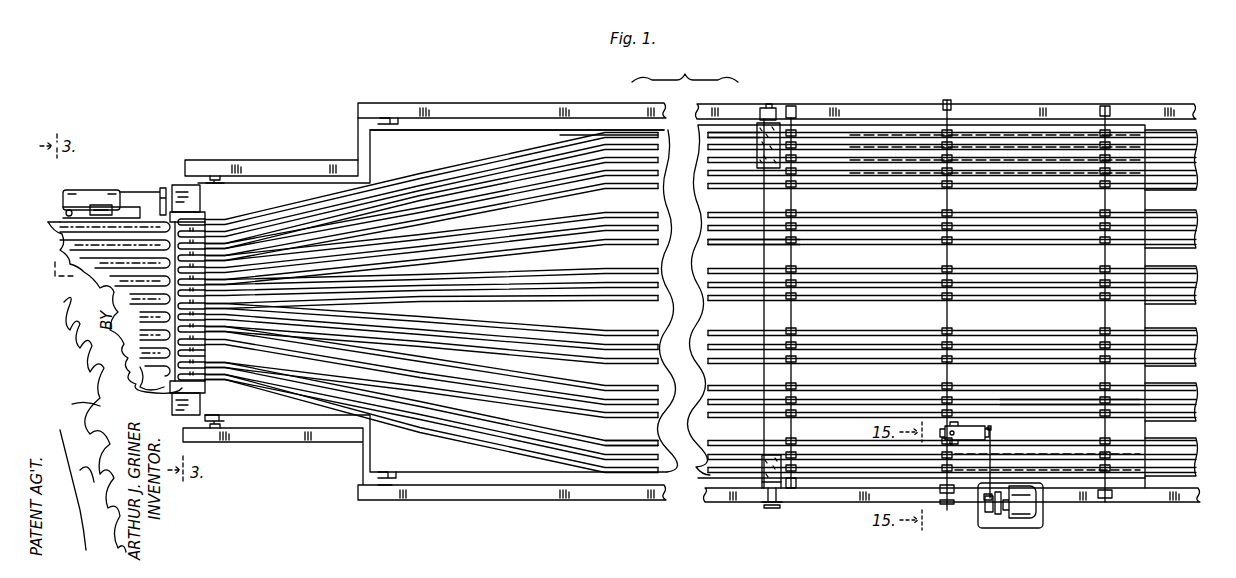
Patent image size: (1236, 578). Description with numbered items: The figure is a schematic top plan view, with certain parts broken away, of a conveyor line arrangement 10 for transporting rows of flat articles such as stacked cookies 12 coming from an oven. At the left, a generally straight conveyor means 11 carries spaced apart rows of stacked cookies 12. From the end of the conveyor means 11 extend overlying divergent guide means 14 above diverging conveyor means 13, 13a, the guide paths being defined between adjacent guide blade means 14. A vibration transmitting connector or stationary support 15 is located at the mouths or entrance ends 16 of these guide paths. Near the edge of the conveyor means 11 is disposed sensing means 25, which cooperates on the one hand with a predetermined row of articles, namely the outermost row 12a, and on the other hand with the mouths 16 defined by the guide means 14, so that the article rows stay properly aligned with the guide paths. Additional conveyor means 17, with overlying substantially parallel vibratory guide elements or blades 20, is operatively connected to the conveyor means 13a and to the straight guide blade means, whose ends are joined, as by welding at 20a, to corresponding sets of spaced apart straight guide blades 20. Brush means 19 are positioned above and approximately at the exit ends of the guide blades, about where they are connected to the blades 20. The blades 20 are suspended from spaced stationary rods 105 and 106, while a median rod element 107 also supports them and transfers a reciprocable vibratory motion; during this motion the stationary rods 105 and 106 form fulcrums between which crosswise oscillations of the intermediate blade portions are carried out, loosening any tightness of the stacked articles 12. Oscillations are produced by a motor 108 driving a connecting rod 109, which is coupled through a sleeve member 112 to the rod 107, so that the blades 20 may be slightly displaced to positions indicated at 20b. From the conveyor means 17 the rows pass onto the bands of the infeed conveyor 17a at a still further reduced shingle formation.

The conveyor line arrangement 10 is at (520, 96).
The straight conveyor means 11 is at (47, 230).
The stacked cookies 12 is at (130, 278).
The outermost row 12a is at (64, 206).
The diverging conveyor means 13 is at (258, 183).
The diverging conveyor means 13a is at (435, 128).
The divergent guide means 14 is at (460, 189).
The vibration transmitting connector 15 is at (180, 210).
The entrance ends 16 is at (212, 238).
The additional conveyor means 17 is at (1148, 128).
The infeed conveyor 17a is at (1204, 148).
The brush means 19 is at (760, 152).
The guide blades 20 is at (1090, 472).
The welded connection 20a is at (754, 246).
The displaced blade positions 20b is at (1034, 446).
The sensing means 25 is at (108, 182).
The stationary rod 105 is at (794, 104).
The stationary rod 106 is at (1110, 106).
The median rod element 107 is at (947, 102).
The motor 108 is at (1006, 520).
The connecting rod 109 is at (990, 452).
The sleeve member 112 is at (968, 428).